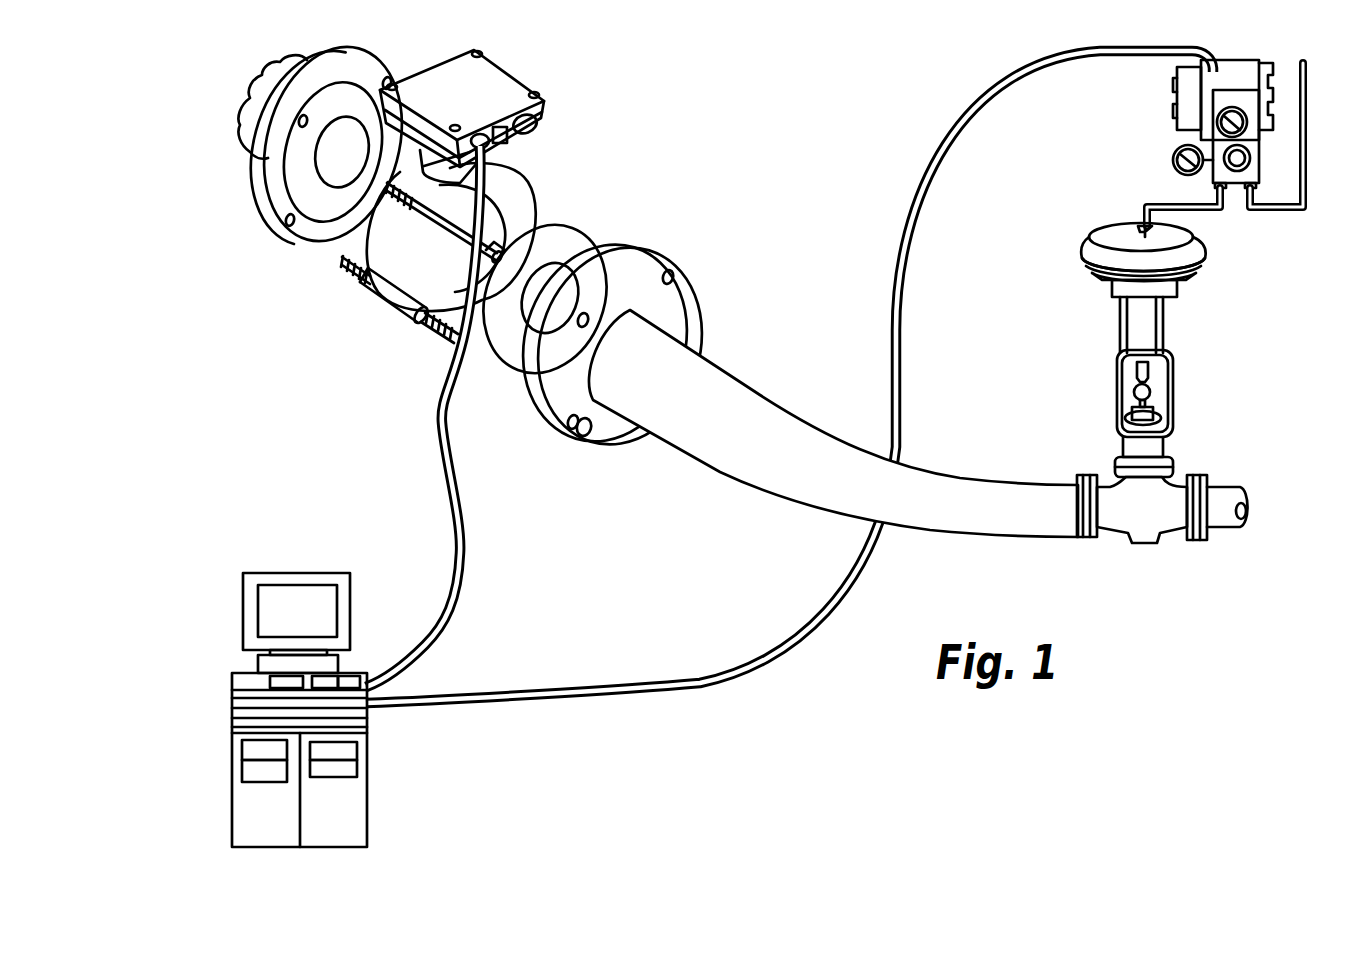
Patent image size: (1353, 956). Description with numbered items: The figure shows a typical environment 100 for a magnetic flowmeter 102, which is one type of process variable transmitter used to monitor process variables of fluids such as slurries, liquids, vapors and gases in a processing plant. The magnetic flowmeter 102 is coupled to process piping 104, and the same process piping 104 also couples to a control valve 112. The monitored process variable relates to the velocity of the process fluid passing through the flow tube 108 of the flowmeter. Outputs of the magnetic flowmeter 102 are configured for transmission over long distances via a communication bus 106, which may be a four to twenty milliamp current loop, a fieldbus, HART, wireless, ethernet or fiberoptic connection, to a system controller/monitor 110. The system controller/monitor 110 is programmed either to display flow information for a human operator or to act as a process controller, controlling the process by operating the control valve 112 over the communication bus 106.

The environment 100 is at (733, 163).
The magnetic flowmeter 102 is at (307, 325).
The process piping 104 is at (781, 483).
The communication bus 106 is at (805, 623).
The flow tube 108 is at (519, 200).
The system controller/monitor 110 is at (394, 745).
The control valve 112 is at (1172, 333).